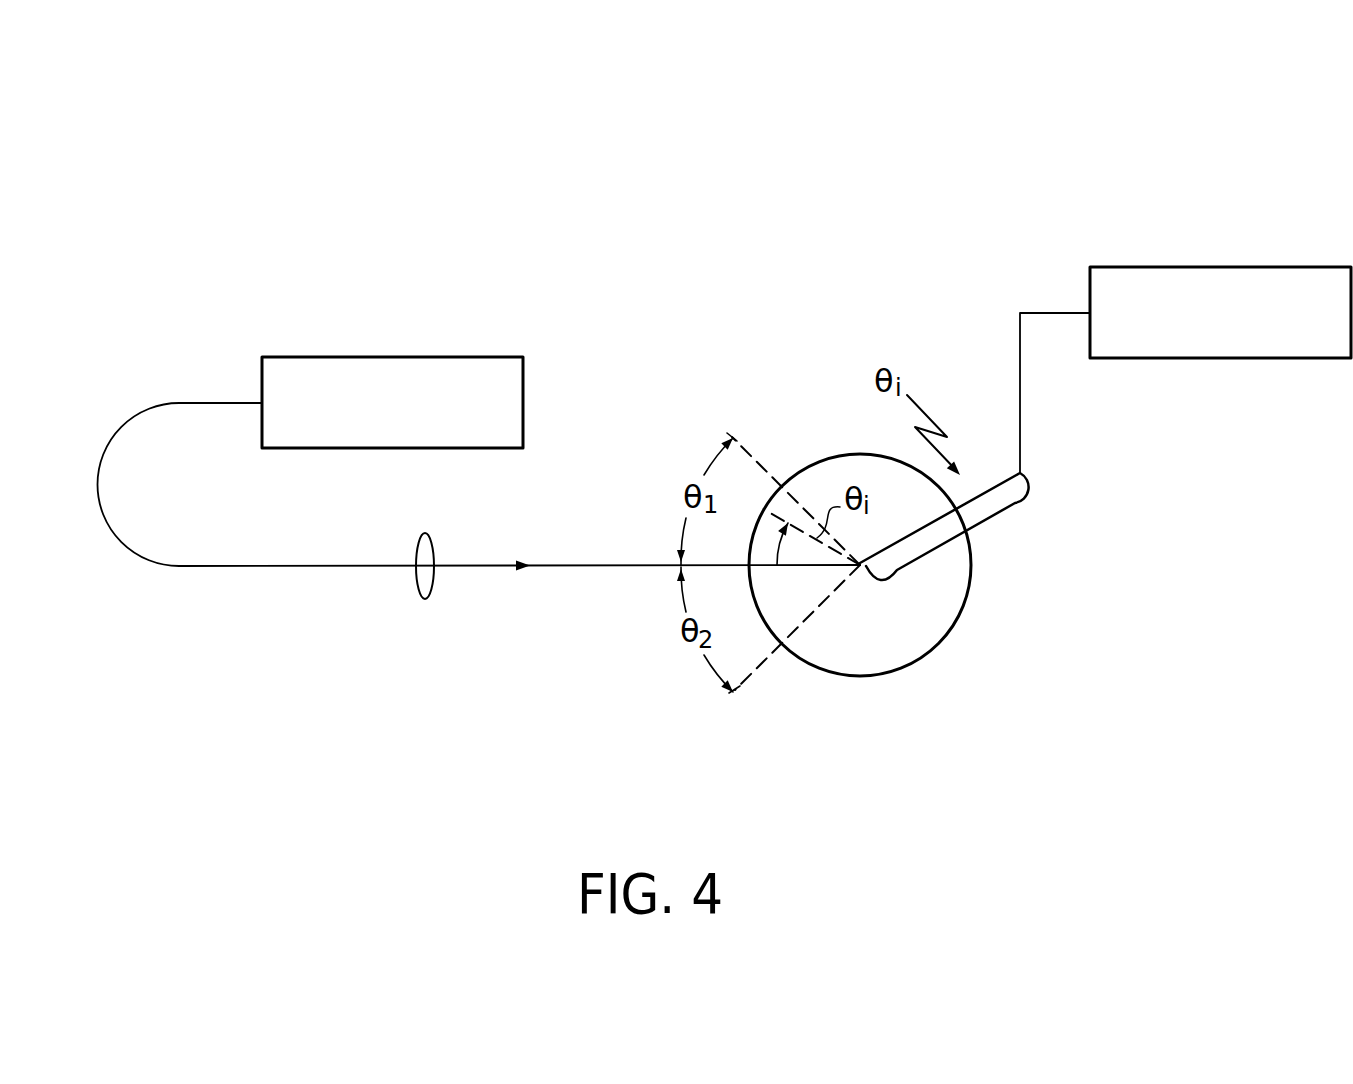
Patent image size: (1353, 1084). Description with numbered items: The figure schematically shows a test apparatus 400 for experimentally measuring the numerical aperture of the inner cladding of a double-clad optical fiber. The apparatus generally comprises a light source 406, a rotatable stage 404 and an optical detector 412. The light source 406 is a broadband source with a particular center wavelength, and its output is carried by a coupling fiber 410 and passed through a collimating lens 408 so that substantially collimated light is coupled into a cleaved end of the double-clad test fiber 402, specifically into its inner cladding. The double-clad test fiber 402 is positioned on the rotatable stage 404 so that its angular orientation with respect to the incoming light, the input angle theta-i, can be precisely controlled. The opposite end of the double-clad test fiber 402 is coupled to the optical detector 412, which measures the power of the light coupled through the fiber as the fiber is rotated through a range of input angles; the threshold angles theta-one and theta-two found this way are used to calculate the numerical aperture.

The optical measurement system 400 is at (786, 149).
The double-clad test fiber 402 is at (923, 555).
The rotatable stage 404 is at (908, 667).
The light source 406 is at (393, 357).
The collimating lens 408 is at (423, 600).
The coupling fiber 410 is at (128, 558).
The optical detector 412 is at (1220, 267).